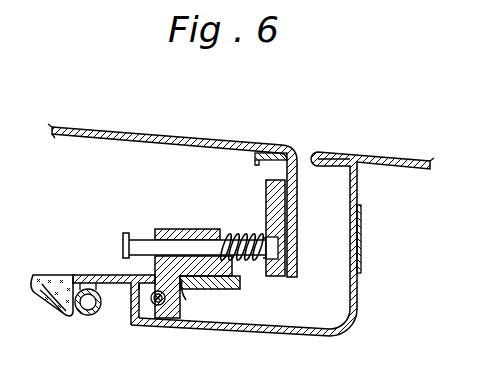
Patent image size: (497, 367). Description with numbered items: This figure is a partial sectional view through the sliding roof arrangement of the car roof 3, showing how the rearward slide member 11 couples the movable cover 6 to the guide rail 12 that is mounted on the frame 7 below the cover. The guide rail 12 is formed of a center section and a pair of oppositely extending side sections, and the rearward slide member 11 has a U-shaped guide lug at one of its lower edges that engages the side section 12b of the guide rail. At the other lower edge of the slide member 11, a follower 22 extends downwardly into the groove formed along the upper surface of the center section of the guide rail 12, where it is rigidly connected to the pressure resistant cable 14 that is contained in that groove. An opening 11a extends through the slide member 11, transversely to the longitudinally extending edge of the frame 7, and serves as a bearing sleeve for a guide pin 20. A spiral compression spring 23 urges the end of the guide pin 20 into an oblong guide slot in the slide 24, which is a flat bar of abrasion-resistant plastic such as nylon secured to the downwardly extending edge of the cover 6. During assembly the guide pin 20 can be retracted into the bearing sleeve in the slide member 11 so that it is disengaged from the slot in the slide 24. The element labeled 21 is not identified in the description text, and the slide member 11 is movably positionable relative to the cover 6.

The roof 3 is at (378, 154).
The cover 6 is at (108, 127).
The frame 7 is at (346, 318).
The rearward slide member 11 is at (176, 230).
The opening 11a is at (193, 238).
The guide rail 12 is at (168, 314).
The side section 12b is at (184, 284).
The pressure resistant cable 14 is at (156, 306).
The guide pin 20 is at (131, 246).
The guide bar 21 is at (219, 290).
The follower 22 is at (152, 287).
The spiral compression spring 23 is at (242, 234).
The slide 24 is at (265, 188).